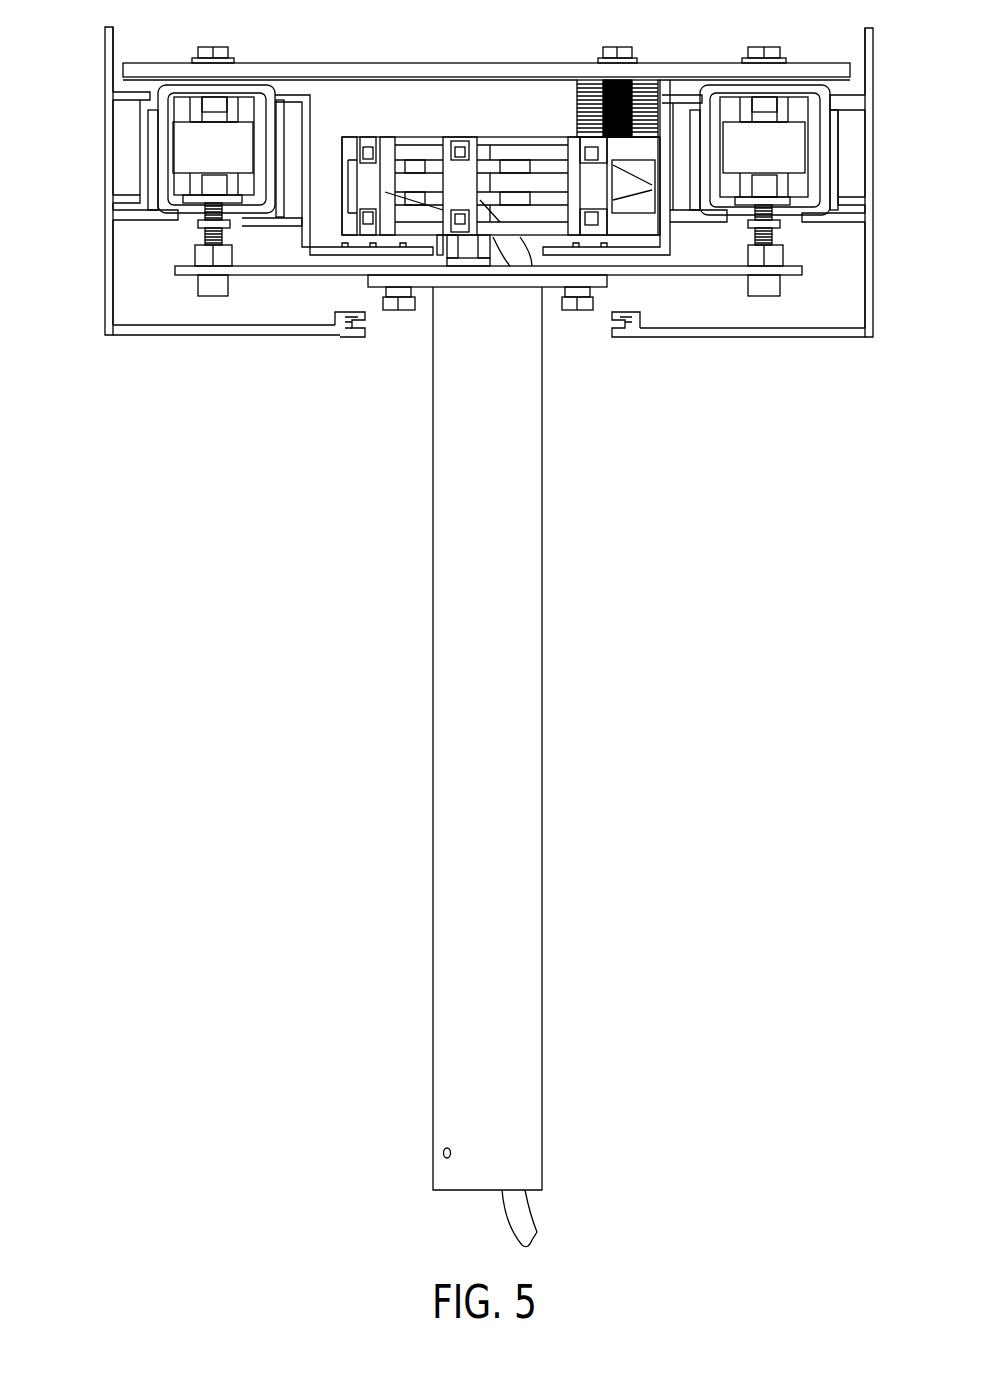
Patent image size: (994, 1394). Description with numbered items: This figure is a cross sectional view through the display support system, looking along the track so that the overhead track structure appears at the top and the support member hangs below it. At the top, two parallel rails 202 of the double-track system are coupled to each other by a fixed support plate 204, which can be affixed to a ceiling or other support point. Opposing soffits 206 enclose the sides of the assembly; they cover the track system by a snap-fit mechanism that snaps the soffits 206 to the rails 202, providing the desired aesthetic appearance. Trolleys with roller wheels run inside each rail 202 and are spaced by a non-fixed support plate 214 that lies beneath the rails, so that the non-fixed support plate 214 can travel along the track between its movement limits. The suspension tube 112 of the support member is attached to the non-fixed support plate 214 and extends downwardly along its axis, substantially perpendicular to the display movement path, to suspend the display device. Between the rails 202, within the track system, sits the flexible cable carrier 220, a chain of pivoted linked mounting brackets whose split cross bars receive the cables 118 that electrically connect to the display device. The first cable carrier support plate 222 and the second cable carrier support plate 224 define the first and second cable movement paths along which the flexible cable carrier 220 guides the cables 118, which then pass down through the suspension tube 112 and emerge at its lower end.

The suspension tube 112 is at (542, 608).
The cables 118 is at (530, 1215).
The rails 202 is at (254, 90).
The fixed support plate 204 is at (475, 62).
The soffits 206 is at (105, 142).
The non-fixed support plate 214 is at (678, 277).
The flexible cable carrier 220 is at (522, 160).
The first cable carrier support plate 222 is at (675, 240).
The second cable carrier support plate 224 is at (310, 127).